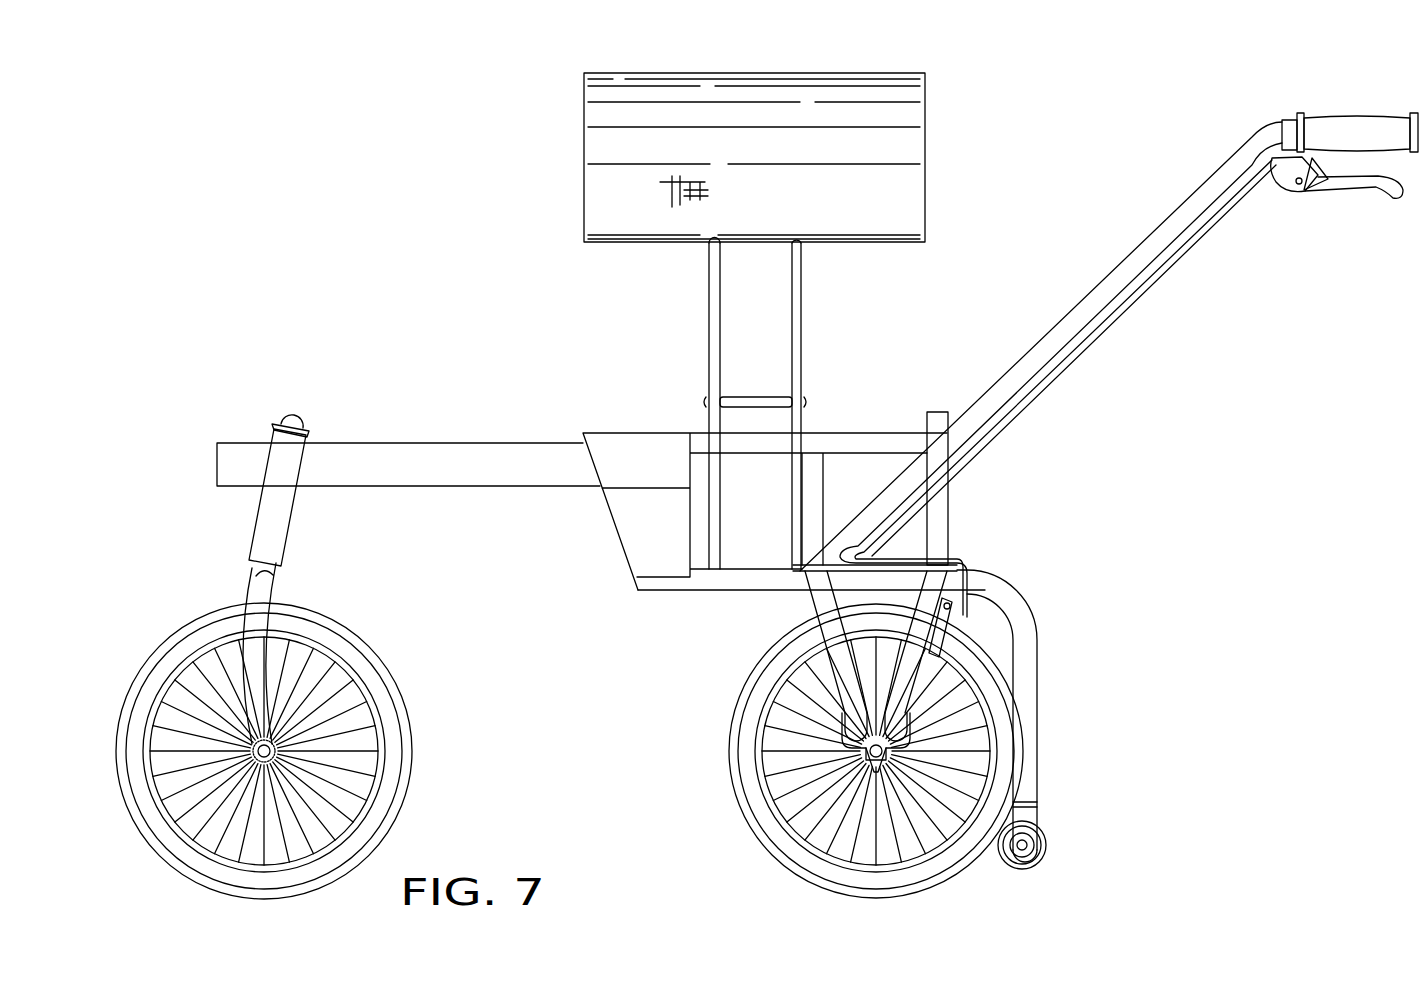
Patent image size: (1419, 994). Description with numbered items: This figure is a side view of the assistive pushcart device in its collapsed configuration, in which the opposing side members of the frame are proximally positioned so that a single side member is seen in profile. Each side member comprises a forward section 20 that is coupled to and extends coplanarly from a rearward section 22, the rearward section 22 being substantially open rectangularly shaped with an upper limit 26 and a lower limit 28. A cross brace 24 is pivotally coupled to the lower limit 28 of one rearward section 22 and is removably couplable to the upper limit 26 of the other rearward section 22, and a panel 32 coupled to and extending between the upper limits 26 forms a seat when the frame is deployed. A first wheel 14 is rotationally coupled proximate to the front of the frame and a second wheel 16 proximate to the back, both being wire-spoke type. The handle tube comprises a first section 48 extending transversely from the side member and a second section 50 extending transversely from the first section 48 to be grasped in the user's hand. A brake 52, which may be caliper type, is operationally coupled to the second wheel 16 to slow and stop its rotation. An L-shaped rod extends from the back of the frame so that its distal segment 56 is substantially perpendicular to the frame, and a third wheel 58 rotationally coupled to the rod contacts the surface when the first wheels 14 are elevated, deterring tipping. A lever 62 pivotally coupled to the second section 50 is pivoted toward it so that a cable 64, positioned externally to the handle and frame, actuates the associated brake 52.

The first wheel 14 is at (402, 767).
The second wheel 16 is at (735, 760).
The forward section 20 is at (408, 444).
The rearward section 22 is at (813, 468).
The cross brace 24 is at (800, 300).
The upper limit 26 is at (888, 437).
The lower limit 28 is at (722, 597).
The panel 32 is at (893, 118).
The first section 48 is at (1210, 192).
The second section 50 is at (1360, 130).
The brake 52 is at (948, 640).
The distal segment 56 is at (1025, 706).
The third wheel 58 is at (1043, 836).
The lever 62 is at (1337, 188).
The cable 64 is at (1162, 255).